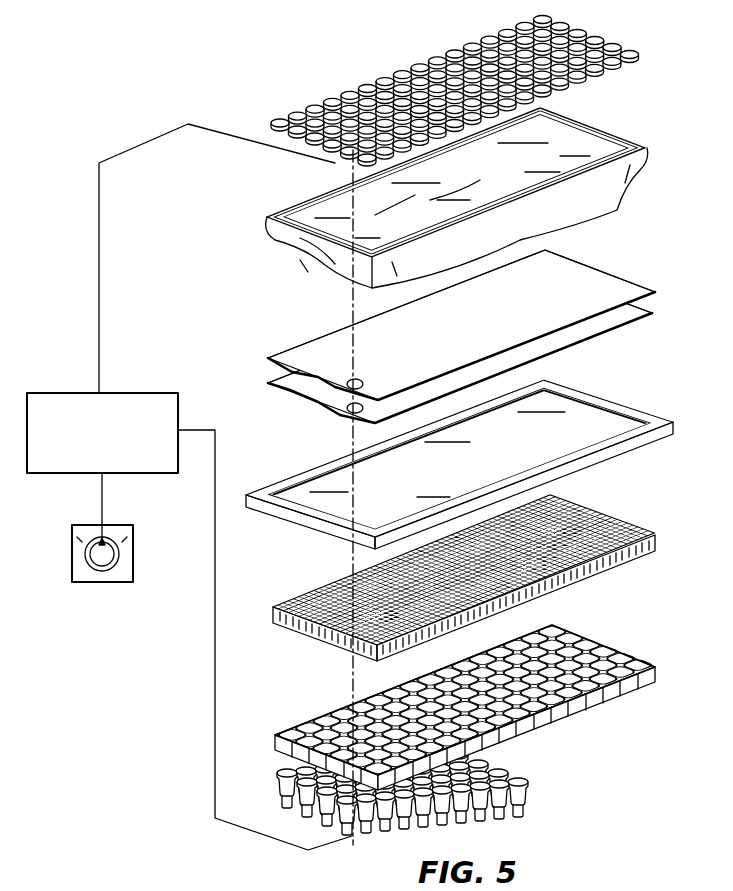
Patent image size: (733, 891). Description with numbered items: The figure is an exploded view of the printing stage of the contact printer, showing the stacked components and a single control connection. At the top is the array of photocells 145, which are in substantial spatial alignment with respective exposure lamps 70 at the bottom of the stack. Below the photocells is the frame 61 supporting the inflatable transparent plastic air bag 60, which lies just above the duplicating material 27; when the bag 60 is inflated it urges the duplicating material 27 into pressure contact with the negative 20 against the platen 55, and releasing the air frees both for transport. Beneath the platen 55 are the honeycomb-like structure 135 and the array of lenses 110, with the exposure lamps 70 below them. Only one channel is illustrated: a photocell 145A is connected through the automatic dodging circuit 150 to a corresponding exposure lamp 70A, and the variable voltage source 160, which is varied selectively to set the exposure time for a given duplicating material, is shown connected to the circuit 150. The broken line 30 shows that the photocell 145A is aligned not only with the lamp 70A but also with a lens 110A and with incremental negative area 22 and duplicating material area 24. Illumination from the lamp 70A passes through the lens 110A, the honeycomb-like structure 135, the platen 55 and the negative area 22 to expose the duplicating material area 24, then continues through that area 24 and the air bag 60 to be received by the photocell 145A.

The array of photocells 145 is at (604, 36).
The photocell 145A is at (346, 156).
The frame 61 is at (648, 148).
The inflatable transparent plastic air bag 60 is at (636, 178).
The broken line 30 is at (352, 292).
The duplicating material 27 is at (651, 292).
The negative 20 is at (653, 314).
The duplicating material area 24 is at (349, 380).
The negative area 22 is at (346, 410).
The platen 55 is at (674, 422).
The honeycomb-like structure 135 is at (656, 540).
The lenses 110 is at (640, 688).
The lens 110A is at (356, 770).
The exposure lamps 70 is at (518, 784).
The exposure lamp 70A is at (360, 834).
The automatic dodging circuit 150 is at (146, 393).
The variable voltage source 160 is at (72, 545).